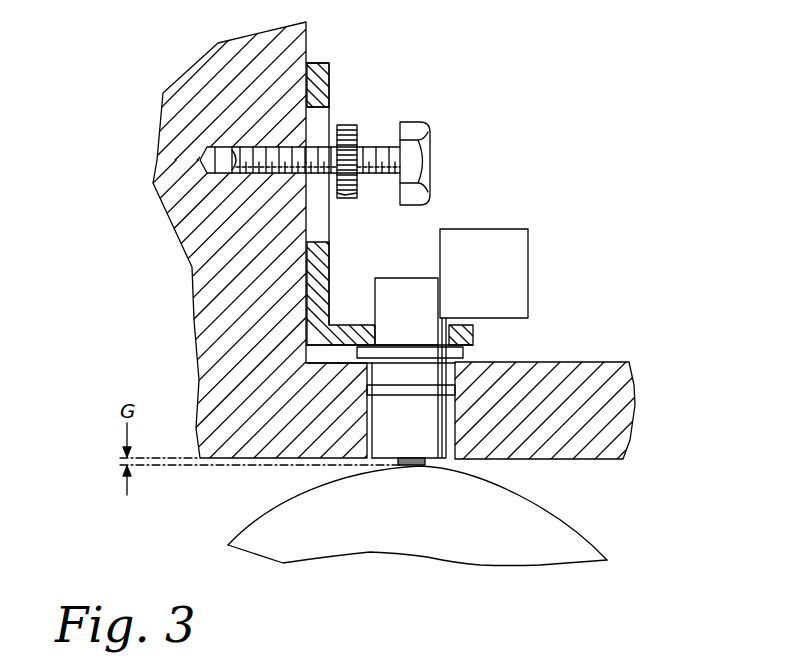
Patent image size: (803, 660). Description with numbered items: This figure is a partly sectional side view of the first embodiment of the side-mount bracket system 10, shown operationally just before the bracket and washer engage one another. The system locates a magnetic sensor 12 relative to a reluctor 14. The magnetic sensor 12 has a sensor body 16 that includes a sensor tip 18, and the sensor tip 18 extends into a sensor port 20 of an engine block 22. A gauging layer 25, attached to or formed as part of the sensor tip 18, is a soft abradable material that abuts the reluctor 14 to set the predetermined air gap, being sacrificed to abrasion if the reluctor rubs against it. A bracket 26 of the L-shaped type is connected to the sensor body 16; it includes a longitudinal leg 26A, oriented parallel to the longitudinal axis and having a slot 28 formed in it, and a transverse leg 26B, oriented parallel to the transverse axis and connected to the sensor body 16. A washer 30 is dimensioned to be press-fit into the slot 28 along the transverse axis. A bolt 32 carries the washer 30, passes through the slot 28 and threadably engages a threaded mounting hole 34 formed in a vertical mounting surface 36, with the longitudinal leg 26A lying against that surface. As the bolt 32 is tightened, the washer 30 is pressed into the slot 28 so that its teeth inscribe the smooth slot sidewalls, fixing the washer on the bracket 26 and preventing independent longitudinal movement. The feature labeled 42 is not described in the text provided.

The side-mount bracket system 10 is at (372, 203).
The magnetic sensor 12 is at (497, 229).
The reluctor 14 is at (593, 540).
The sensor body 16 is at (455, 443).
The sensor tip 18 is at (438, 445).
The sensor port 20 is at (455, 404).
The engine block 22 is at (608, 362).
The gauging layer 25 is at (405, 467).
The bracket 26 is at (328, 68).
The longitudinal leg 26A is at (329, 272).
The transverse leg 26B is at (473, 335).
The slot 28 is at (330, 108).
The washer 30 is at (353, 125).
The bolt 32 is at (426, 122).
The threaded mounting hole 34 is at (207, 153).
The vertical mounting surface 36 is at (307, 33).
The washer flange 42 is at (348, 198).